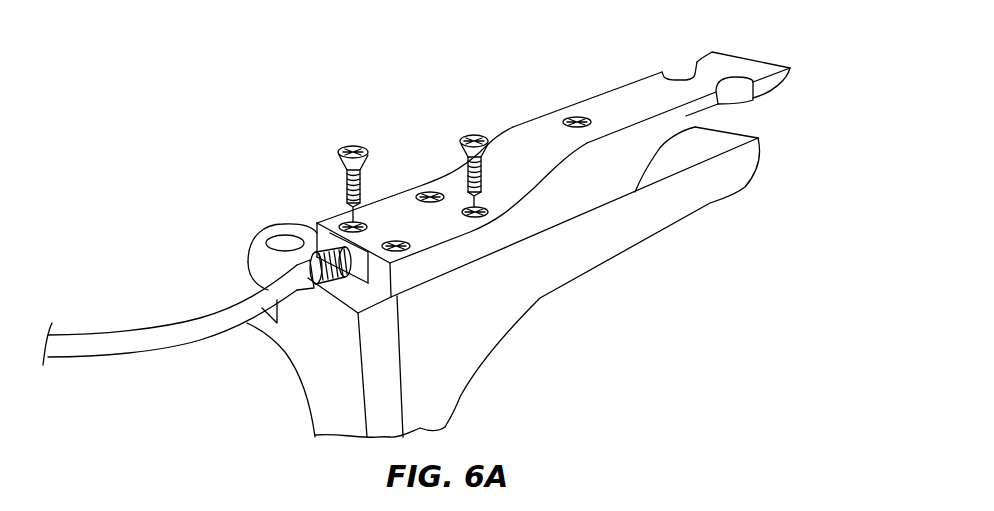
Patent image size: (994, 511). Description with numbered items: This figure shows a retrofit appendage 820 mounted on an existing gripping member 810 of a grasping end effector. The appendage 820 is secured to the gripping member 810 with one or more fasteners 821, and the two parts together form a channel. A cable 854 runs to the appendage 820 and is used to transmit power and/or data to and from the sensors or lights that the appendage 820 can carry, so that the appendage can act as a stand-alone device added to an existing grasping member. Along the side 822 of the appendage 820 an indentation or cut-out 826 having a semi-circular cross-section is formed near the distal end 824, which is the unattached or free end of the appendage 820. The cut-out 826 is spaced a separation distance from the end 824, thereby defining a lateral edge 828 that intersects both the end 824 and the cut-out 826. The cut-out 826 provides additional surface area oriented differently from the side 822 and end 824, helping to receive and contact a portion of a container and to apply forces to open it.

The gripping member 810 is at (714, 206).
The appendage 820 is at (597, 108).
The fasteners 821 is at (394, 240).
The side 822 is at (635, 78).
The distal end 824 is at (748, 58).
The cut-out 826 is at (737, 86).
The lateral edge 828 is at (770, 85).
The cable 854 is at (172, 333).